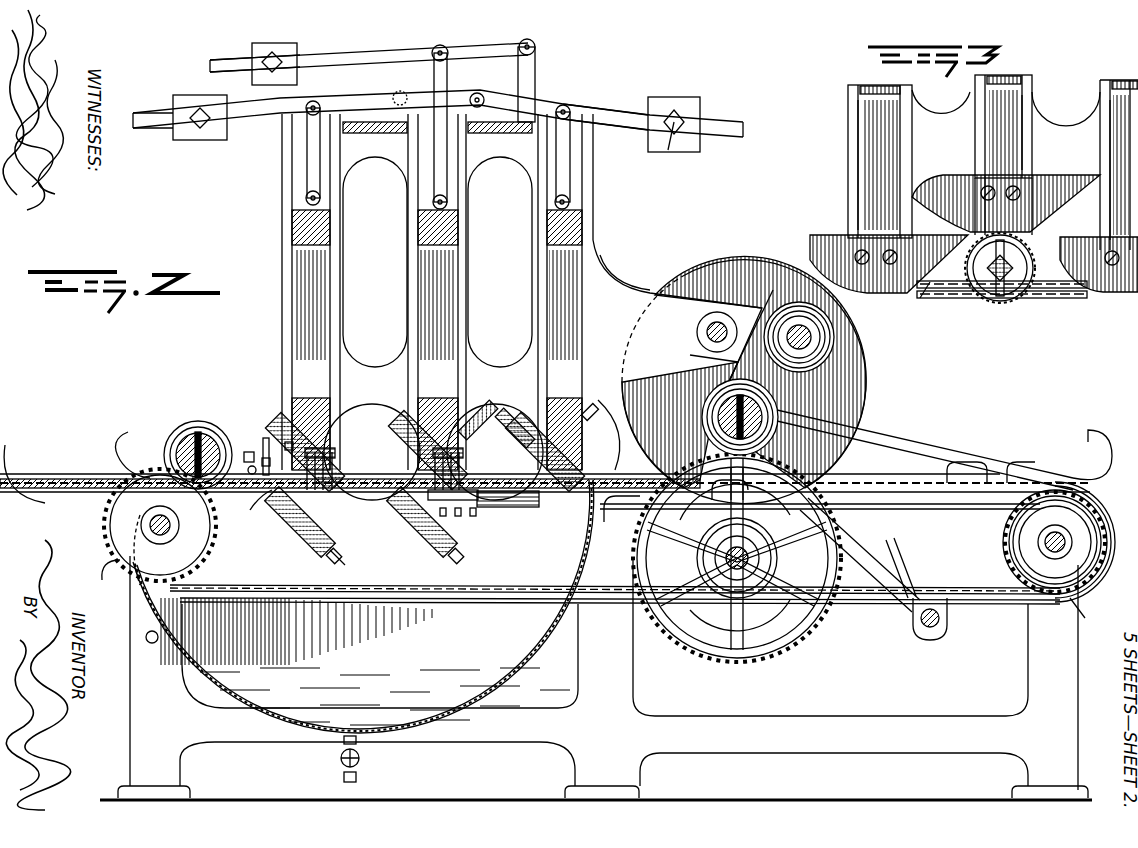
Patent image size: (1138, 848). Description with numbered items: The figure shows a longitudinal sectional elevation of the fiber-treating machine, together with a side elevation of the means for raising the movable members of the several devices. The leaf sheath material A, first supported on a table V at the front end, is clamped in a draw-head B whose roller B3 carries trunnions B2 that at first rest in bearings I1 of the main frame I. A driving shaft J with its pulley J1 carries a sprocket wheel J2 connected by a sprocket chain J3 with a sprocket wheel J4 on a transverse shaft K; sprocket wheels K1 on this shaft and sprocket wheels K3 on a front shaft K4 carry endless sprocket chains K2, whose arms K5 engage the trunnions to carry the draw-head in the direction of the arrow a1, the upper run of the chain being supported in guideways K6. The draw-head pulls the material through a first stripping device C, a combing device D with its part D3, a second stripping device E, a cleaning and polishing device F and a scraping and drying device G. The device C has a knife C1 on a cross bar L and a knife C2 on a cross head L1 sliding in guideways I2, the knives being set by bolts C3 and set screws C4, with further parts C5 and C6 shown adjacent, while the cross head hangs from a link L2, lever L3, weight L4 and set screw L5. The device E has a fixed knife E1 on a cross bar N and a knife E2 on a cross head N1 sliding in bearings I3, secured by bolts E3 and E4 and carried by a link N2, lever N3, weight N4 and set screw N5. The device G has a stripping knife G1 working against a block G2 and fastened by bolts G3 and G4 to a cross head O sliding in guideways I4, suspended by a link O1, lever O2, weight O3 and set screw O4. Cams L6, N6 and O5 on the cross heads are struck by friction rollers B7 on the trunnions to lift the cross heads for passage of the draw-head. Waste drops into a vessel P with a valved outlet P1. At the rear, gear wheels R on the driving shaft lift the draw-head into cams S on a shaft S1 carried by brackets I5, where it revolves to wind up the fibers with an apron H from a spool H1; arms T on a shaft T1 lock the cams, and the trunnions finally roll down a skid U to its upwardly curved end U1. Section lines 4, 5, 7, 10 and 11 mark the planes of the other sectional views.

In FIG. 2, the section line 4— 4 is at (135, 410).
In FIG. 2, the section line 5— 5 is at (716, 316).
In FIG. 2, the section line 7— 7 is at (163, 378).
In FIG. 2, the section line 10— 10 is at (380, 554).
In FIG. 2, the section line 11— 11 is at (505, 556).
In FIG. 2, the leaf sheath material A is at (38, 479).
In FIG. 2, the table V is at (24, 483).
In FIG. 2, the main frame I is at (578, 682).
In FIG. 3, the main frame I is at (936, 148).
In FIG. 2, the bearings I1 is at (110, 452).
In FIG. 2, the guideways I2 is at (284, 346).
In FIG. 3, the guideways I2 is at (864, 84).
In FIG. 2, the bearings I3 is at (456, 290).
In FIG. 3, the bearings I3 is at (1026, 74).
In FIG. 2, the guideways I4 is at (594, 188).
In FIG. 3, the guideways I4 is at (1108, 78).
In FIG. 2, the brackets I5 is at (632, 290).
In FIG. 2, the draw-head B is at (760, 410).
In FIG. 3, the draw-head B is at (994, 302).
In FIG. 3, the trunnions B2 is at (1010, 290).
In FIG. 2, the roller B3 is at (215, 445).
In FIG. 2, the friction rollers B7 is at (186, 440).
In FIG. 3, the friction rollers B7 is at (1018, 262).
In FIG. 2, the arrow a1 is at (252, 418).
In FIG. 2, the cross bar L is at (272, 550).
In FIG. 2, the cross head L1 is at (266, 438).
In FIG. 3, the cross head L1 is at (866, 200).
In FIG. 2, the link L2 is at (308, 166).
In FIG. 2, the lever L3 is at (250, 126).
In FIG. 2, the weight L4 is at (183, 132).
In FIG. 2, the set screw L5 is at (199, 108).
In FIG. 2, the cam L6 is at (241, 447).
In FIG. 3, the cam L6 is at (830, 250).
In FIG. 2, the transverse shaft K is at (1055, 552).
In FIG. 3, the transverse shaft K is at (930, 300).
In FIG. 2, the sprocket wheels K1 is at (1062, 490).
In FIG. 2, the endless sprocket chains K2 is at (262, 570).
In FIG. 3, the endless sprocket chains K2 is at (1050, 298).
In FIG. 2, the sprocket wheels K3 is at (622, 507).
In FIG. 2, the transverse shaft K4 is at (162, 535).
In FIG. 2, the arms K5 is at (176, 452).
In FIG. 3, the guideways K6 is at (966, 290).
In FIG. 2, the first stripping device C is at (304, 454).
In FIG. 2, the knife C1 is at (256, 511).
In FIG. 2, the knife C2 is at (246, 462).
In FIG. 2, the bolts C3 is at (275, 532).
In FIG. 2, the set screws C4 is at (328, 552).
In FIG. 2, the block C5 is at (267, 448).
In FIG. 2, the block C6 is at (281, 436).
In FIG. 2, the combing device D is at (303, 525).
In FIG. 2, the slide block D3 is at (332, 420).
In FIG. 2, the second stripping device E is at (362, 459).
In FIG. 2, the fixed knife E1 is at (415, 525).
In FIG. 2, the knife E2 is at (410, 449).
In FIG. 2, the bolts E3 is at (412, 440).
In FIG. 2, the bolts E4 is at (470, 378).
In FIG. 3, the bolts E4 is at (1016, 100).
In FIG. 2, the cross bar N is at (422, 536).
In FIG. 2, the cross head N1 is at (405, 430).
In FIG. 2, the link N2 is at (432, 190).
In FIG. 2, the lever N3 is at (400, 58).
In FIG. 2, the weight N4 is at (290, 46).
In FIG. 2, the set screw N5 is at (270, 56).
In FIG. 2, the cam N6 is at (478, 420).
In FIG. 3, the cam N6 is at (966, 204).
In FIG. 2, the cross head O is at (520, 420).
In FIG. 3, the cross head O is at (1112, 126).
In FIG. 2, the link O1 is at (584, 160).
In FIG. 2, the lever O2 is at (612, 116).
In FIG. 2, the weight O3 is at (668, 106).
In FIG. 2, the set screw O4 is at (666, 148).
In FIG. 2, the cam O5 is at (609, 435).
In FIG. 3, the cam O5 is at (1104, 294).
In FIG. 2, the scraping and drying device G is at (540, 451).
In FIG. 2, the stripping knife G1 is at (546, 436).
In FIG. 2, the block G2 is at (522, 508).
In FIG. 2, the bolts G3 is at (515, 428).
In FIG. 2, the bolts G4 is at (598, 405).
In FIG. 2, the cleaning and polishing device F is at (457, 487).
In FIG. 2, the apron H is at (703, 351).
In FIG. 2, the spool H1 is at (834, 340).
In FIG. 2, the cams S is at (855, 386).
In FIG. 2, the shaft S1 is at (700, 330).
In FIG. 2, the driving shaft J is at (725, 548).
In FIG. 2, the pulley J1 is at (778, 625).
In FIG. 2, the sprocket wheel J2 is at (728, 585).
In FIG. 2, the sprocket chain J3 is at (905, 580).
In FIG. 2, the sprocket wheel J4 is at (1020, 546).
In FIG. 2, the gear wheels R is at (693, 635).
In FIG. 2, the arms T is at (880, 590).
In FIG. 2, the shaft T1 is at (930, 628).
In FIG. 2, the skid U is at (920, 445).
In FIG. 2, the upwardly curved end U1 is at (1088, 422).
In FIG. 2, the vessel P is at (363, 606).
In FIG. 2, the valved outlet P1 is at (360, 772).